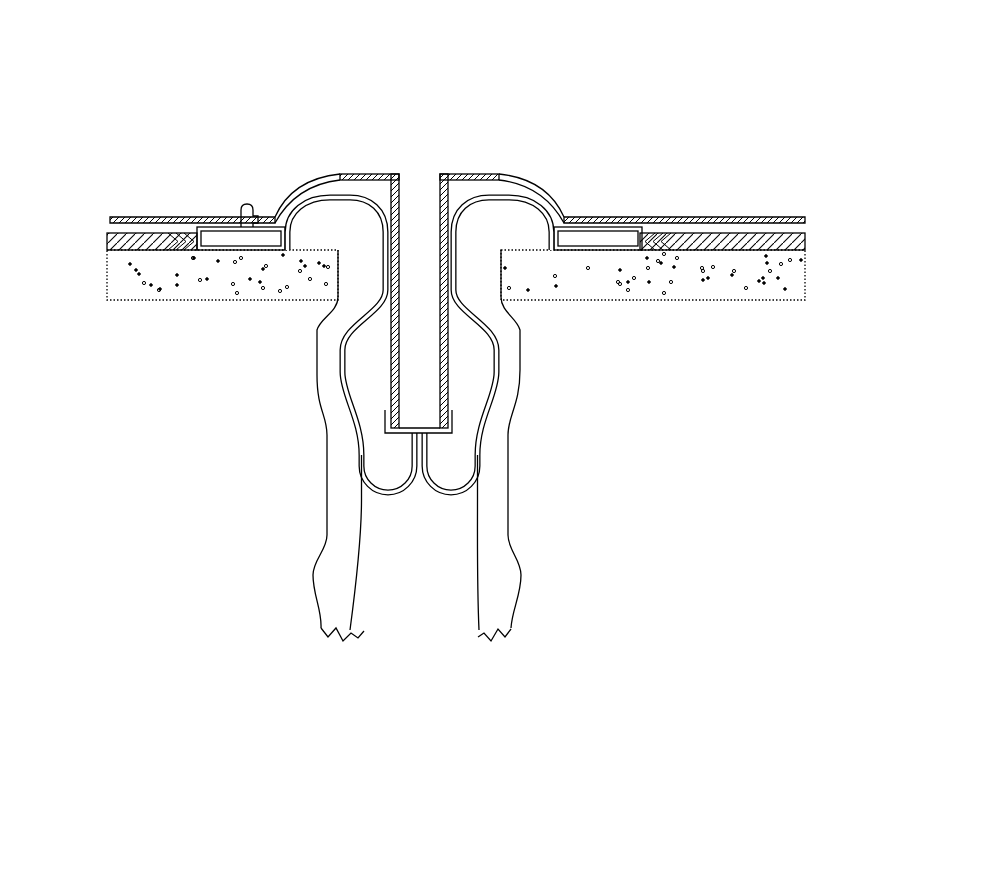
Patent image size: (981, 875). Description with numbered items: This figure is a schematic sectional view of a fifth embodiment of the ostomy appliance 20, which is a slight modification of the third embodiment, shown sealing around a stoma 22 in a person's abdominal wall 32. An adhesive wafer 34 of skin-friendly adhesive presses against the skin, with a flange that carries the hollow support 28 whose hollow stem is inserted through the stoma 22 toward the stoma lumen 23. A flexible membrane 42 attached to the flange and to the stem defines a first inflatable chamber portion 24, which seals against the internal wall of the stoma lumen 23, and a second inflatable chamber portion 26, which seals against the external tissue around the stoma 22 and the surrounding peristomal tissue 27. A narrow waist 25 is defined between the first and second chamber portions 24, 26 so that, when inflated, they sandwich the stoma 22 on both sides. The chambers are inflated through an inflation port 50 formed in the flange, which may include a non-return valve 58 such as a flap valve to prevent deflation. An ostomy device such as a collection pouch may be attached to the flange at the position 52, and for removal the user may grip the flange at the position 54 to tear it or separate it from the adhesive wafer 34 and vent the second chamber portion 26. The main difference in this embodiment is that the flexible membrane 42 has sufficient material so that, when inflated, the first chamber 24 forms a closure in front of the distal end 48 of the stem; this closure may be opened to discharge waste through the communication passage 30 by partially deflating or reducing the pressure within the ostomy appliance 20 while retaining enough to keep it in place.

The ostomy appliance 20 is at (396, 94).
The stoma 22 is at (343, 227).
The stoma lumen 23 is at (477, 583).
The first inflatable chamber portion 24 is at (480, 363).
The waist 25 is at (387, 262).
The second inflatable chamber portion 26 is at (517, 187).
The peristomal tissue 27 is at (597, 250).
The hollow support 28 is at (452, 178).
The communication passage 30 is at (412, 193).
The abdominal wall 32 is at (105, 282).
The adhesive wafer 34 is at (107, 242).
The flexible membrane 42 is at (215, 252).
The distal end 48 is at (390, 393).
The inflation port 50 is at (244, 212).
The attachment position 52 is at (165, 203).
The gripping position 54 is at (779, 212).
The non-return valve 58 is at (245, 232).